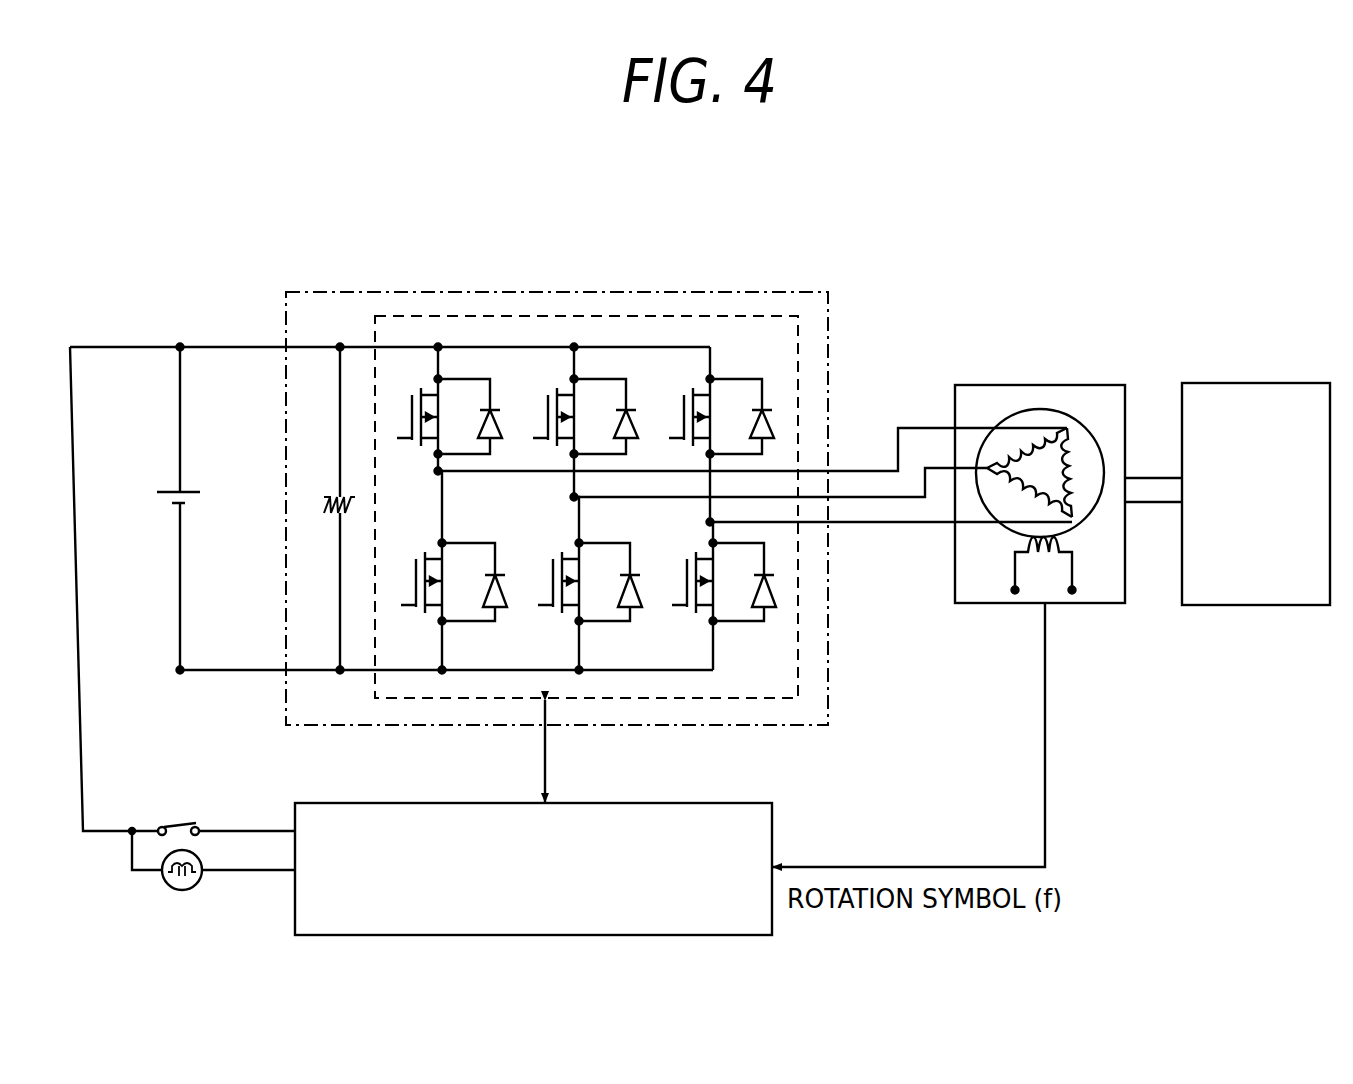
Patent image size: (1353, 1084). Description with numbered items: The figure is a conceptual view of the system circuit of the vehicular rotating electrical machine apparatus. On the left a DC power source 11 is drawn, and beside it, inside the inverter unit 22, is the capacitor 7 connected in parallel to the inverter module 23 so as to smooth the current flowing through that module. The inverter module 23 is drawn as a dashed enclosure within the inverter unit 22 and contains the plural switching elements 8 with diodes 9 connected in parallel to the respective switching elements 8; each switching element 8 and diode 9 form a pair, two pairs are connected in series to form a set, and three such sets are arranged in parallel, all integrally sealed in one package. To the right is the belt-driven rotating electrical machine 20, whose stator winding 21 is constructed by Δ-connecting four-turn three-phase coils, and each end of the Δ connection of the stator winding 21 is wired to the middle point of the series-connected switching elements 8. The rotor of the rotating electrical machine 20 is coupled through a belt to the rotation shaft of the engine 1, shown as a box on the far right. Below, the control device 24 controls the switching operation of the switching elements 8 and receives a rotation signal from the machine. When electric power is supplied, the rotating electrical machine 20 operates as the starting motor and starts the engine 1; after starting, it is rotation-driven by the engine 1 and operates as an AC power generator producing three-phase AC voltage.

The engine 1 is at (1294, 378).
The capacitor 7 is at (330, 490).
The switching element 8 is at (410, 385).
The diode 9 is at (497, 392).
The DC power supply (battery) 11 is at (143, 467).
The rotating electrical machine 20 is at (1006, 384).
The stator winding 21 is at (1078, 447).
The inverter unit 22 is at (828, 292).
The inverter module 23 is at (798, 350).
The control device 24 is at (775, 812).